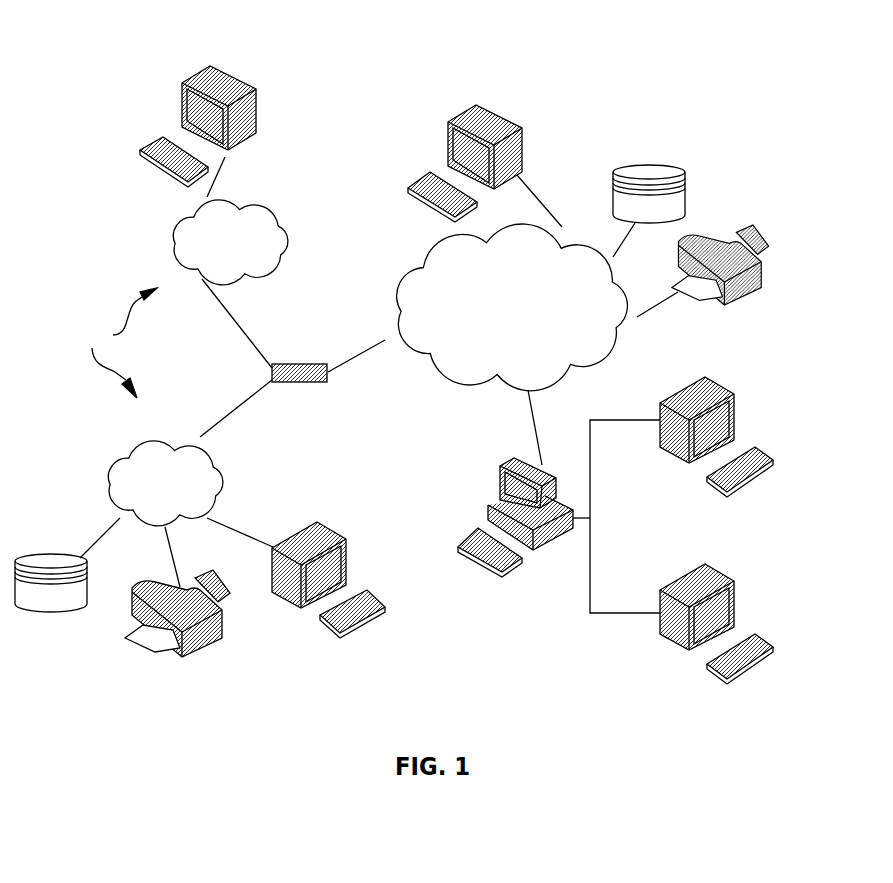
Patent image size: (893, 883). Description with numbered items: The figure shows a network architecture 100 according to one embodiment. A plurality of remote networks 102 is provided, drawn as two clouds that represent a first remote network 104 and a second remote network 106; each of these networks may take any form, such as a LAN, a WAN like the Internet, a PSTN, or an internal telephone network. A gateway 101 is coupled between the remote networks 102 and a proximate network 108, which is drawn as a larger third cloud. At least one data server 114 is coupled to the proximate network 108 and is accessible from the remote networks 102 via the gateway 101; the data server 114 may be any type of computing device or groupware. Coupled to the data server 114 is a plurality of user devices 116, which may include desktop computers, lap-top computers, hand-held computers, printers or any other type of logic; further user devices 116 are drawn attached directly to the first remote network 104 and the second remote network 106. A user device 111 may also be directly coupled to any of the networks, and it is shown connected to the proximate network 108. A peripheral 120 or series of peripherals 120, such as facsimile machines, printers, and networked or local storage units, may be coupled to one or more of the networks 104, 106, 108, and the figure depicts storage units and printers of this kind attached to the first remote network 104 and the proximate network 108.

The network architecture 100 is at (113, 48).
The gateway 101 is at (278, 362).
The remote networks 102 is at (117, 343).
The first remote network 104 is at (103, 460).
The second remote network 106 is at (290, 215).
The proximate network 108 is at (603, 366).
The user device 111 is at (523, 130).
The data server 114 is at (500, 476).
The user devices 116 is at (257, 100).
The peripheral 120 is at (53, 613).